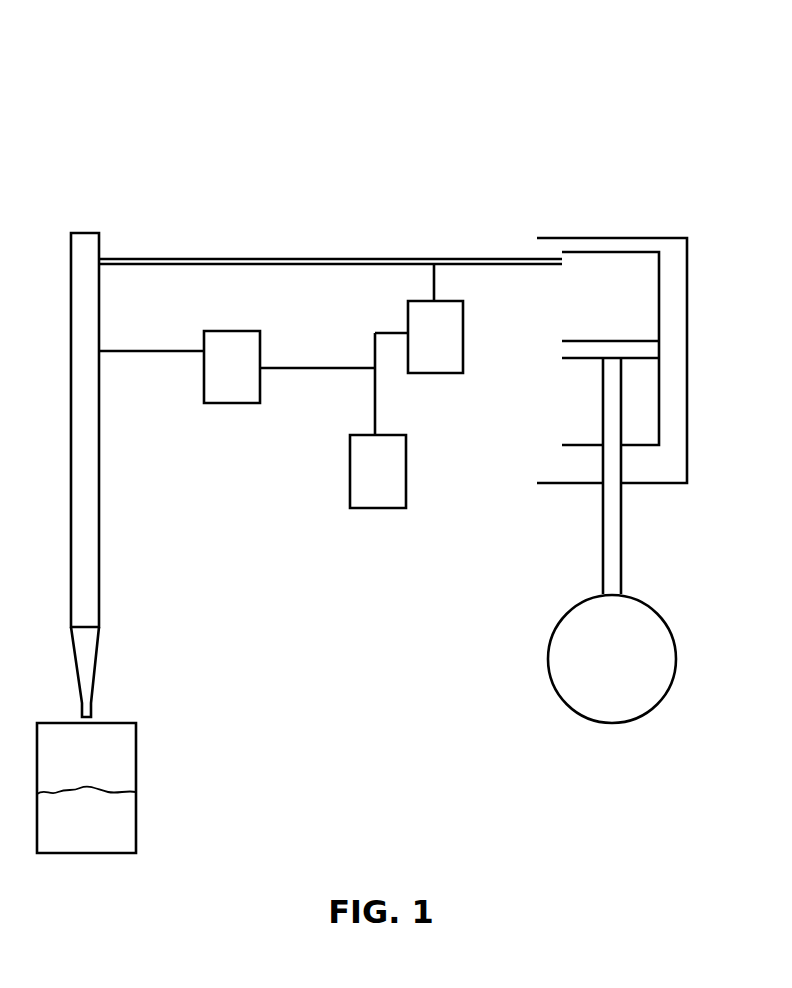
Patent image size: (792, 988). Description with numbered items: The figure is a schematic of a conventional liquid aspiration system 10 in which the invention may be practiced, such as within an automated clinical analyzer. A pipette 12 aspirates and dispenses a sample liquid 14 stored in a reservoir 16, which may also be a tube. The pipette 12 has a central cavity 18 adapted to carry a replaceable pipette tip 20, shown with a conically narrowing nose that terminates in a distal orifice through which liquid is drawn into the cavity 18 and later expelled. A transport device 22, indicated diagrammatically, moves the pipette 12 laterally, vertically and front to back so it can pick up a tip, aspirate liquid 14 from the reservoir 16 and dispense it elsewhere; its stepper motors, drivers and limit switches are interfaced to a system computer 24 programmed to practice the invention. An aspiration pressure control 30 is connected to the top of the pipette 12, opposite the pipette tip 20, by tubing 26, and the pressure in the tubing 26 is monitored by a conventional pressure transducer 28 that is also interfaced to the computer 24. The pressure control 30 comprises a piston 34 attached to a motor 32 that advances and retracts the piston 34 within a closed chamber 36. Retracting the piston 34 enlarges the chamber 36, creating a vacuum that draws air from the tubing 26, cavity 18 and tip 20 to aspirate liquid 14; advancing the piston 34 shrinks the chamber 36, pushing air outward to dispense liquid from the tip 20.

The liquid aspiration system 10 is at (367, 138).
The pipette 12 is at (134, 499).
The sample liquid 14 is at (86, 815).
The reservoir 16 is at (136, 723).
The central cavity 18 is at (88, 563).
The pipette tip 20 is at (87, 700).
The transport device 22 is at (237, 367).
The system computer 24 is at (378, 420).
The tubing 26 is at (330, 258).
The pressure transducer 28 is at (419, 318).
The aspiration pressure control 30 is at (603, 460).
The motor 32 is at (615, 662).
The piston 34 is at (610, 512).
The closed chamber 36 is at (622, 293).